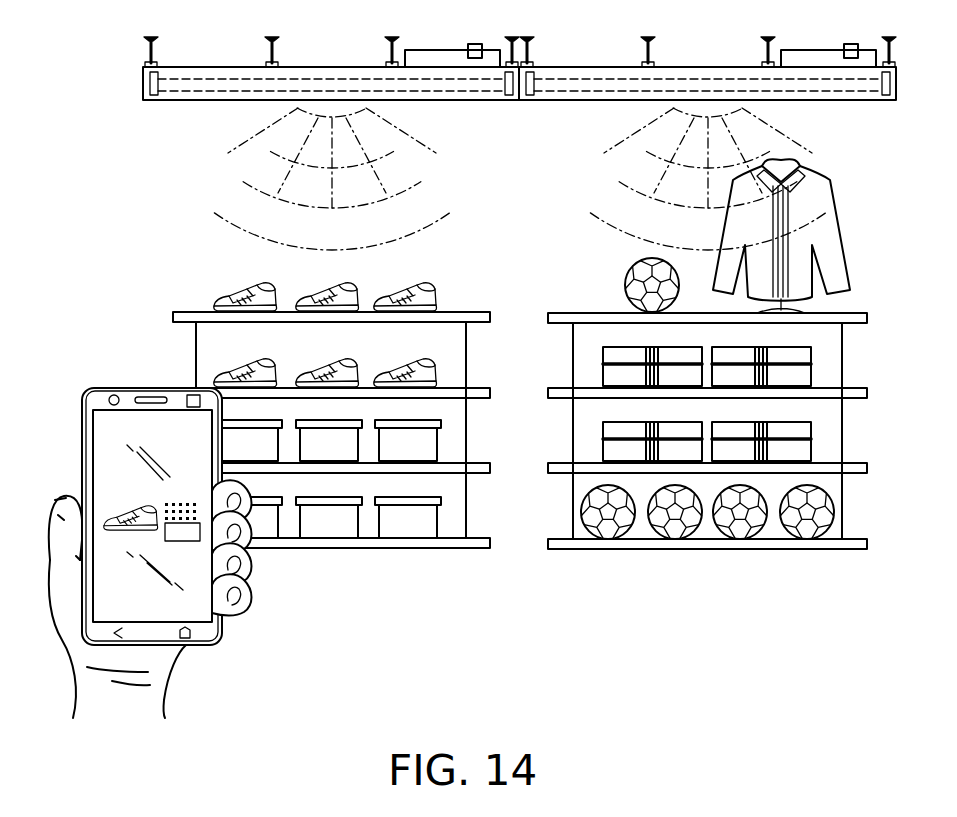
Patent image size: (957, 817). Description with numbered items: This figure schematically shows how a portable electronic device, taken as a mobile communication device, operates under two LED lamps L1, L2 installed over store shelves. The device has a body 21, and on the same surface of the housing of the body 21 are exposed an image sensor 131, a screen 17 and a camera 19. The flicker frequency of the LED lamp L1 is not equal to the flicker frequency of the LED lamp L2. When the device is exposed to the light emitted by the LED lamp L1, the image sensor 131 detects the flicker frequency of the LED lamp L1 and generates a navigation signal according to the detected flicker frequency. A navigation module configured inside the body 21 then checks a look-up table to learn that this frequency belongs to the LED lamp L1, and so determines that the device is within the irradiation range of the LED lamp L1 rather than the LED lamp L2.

The screen 17 is at (118, 476).
The camera 19 is at (109, 396).
The body 21 is at (131, 390).
The image sensor 131 is at (191, 395).
The LED lamp L1 is at (332, 85).
The LED lamp L2 is at (707, 85).